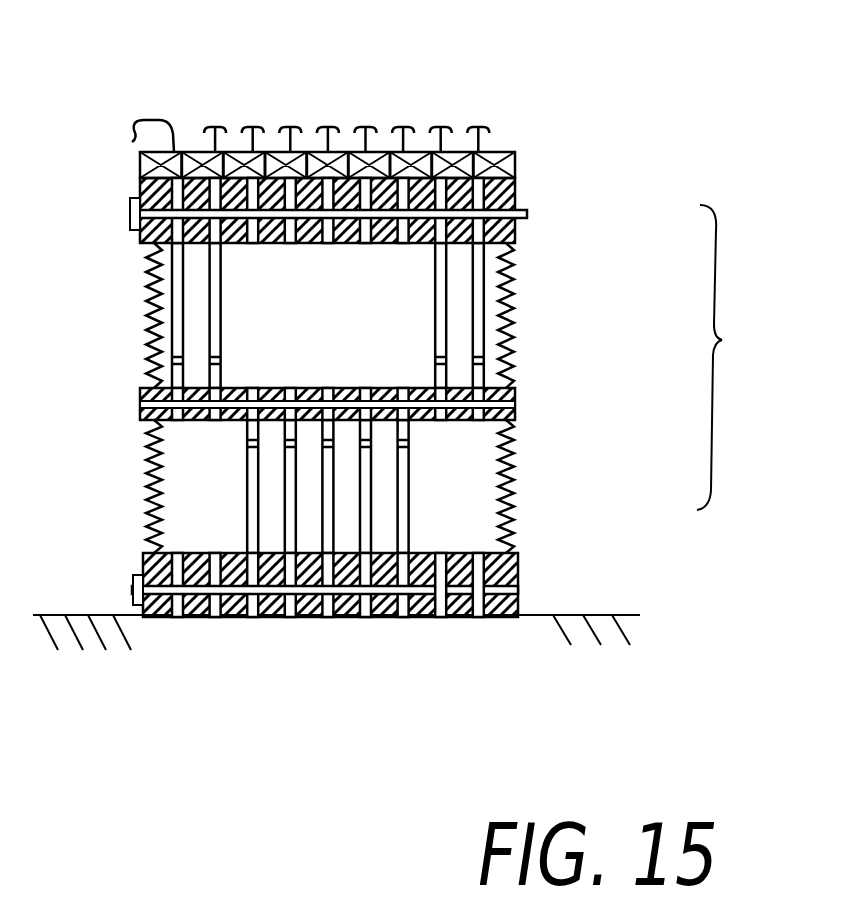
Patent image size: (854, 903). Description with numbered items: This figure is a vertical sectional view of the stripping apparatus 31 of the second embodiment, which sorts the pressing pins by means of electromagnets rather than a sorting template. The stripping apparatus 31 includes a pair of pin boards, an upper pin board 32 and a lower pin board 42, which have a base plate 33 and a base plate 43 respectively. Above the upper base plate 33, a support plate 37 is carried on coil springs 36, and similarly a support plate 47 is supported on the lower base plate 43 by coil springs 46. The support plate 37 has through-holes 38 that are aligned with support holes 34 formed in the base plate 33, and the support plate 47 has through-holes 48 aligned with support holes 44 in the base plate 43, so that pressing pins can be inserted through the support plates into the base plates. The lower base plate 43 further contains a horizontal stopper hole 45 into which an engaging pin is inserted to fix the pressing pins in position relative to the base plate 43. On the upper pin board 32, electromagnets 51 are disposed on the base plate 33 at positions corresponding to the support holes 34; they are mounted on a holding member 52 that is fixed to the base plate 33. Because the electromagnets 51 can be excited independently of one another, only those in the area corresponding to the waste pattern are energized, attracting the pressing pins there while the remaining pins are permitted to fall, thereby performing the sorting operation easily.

The stripping apparatus 31 is at (750, 357).
The upper pin board 32 is at (527, 257).
The base plate 33 is at (515, 197).
The support holes 34 is at (293, 244).
The coil springs 36 is at (147, 290).
The support plate 37 is at (147, 393).
The through-holes 38 is at (364, 388).
The lower pin board 42 is at (528, 530).
The base plate 43 is at (520, 603).
The support holes 44 is at (217, 553).
The stopper hole 45 is at (520, 586).
The coil springs 46 is at (150, 490).
The support plate 47 is at (143, 410).
The through-holes 48 is at (478, 422).
The electromagnets 51 is at (464, 150).
The holding member 52 is at (516, 152).